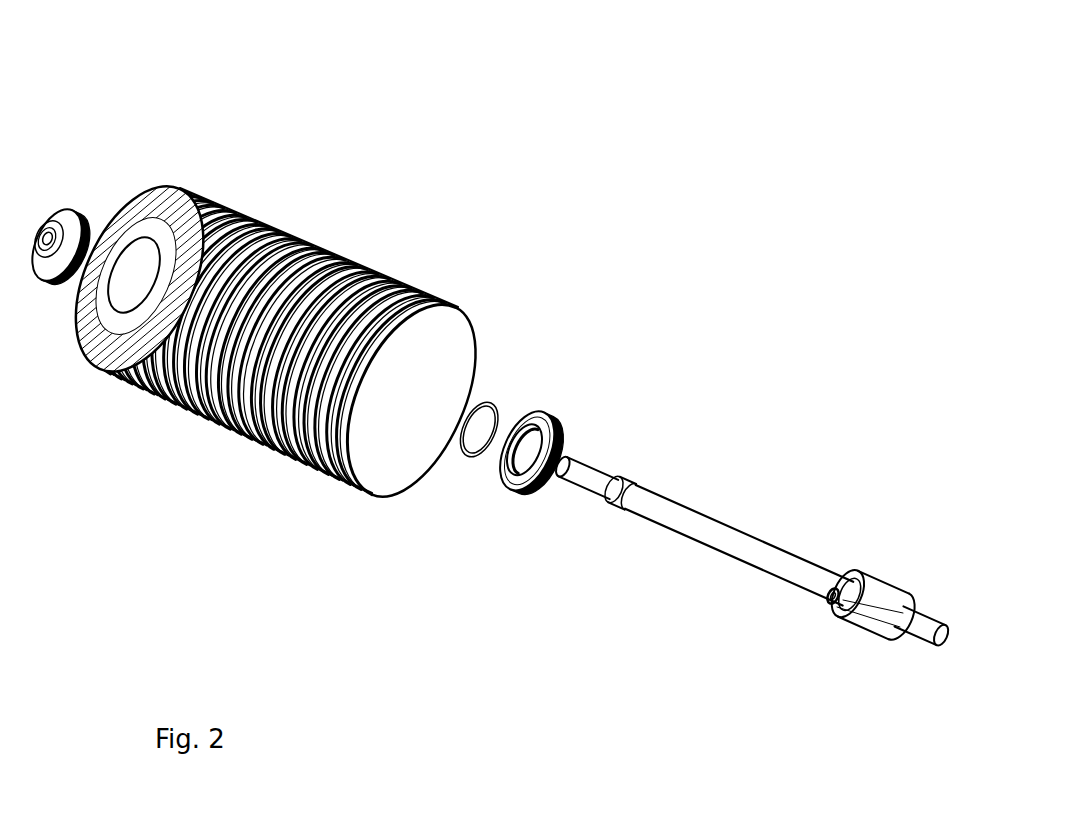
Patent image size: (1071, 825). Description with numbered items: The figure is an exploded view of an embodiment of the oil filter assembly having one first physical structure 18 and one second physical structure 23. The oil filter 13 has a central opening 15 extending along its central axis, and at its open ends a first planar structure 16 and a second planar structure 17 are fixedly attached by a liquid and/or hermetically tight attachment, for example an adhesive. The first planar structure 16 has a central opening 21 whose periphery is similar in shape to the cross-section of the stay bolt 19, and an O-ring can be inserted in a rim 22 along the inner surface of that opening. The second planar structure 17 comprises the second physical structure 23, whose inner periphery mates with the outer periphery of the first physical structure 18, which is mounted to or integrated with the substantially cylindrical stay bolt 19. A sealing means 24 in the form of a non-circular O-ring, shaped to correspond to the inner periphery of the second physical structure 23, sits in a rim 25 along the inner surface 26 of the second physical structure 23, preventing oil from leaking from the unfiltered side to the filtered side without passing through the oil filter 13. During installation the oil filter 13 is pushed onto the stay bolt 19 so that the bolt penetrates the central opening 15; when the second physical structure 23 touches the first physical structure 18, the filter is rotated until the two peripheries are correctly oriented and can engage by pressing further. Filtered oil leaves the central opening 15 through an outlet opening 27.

The oil filter 13 is at (348, 264).
The central opening 15 is at (137, 268).
The first planar structure 16 is at (88, 257).
The second planar structure 17 is at (575, 471).
The first physical structure 18 is at (873, 617).
The stay bolt 19 is at (725, 538).
The central opening 21 is at (48, 228).
The rim 22 is at (93, 218).
The second physical structure 23 is at (523, 498).
The sealing means 24 is at (490, 403).
The rim 25 is at (520, 455).
The inner surface 26 is at (540, 412).
The outlet opening 27 is at (827, 597).